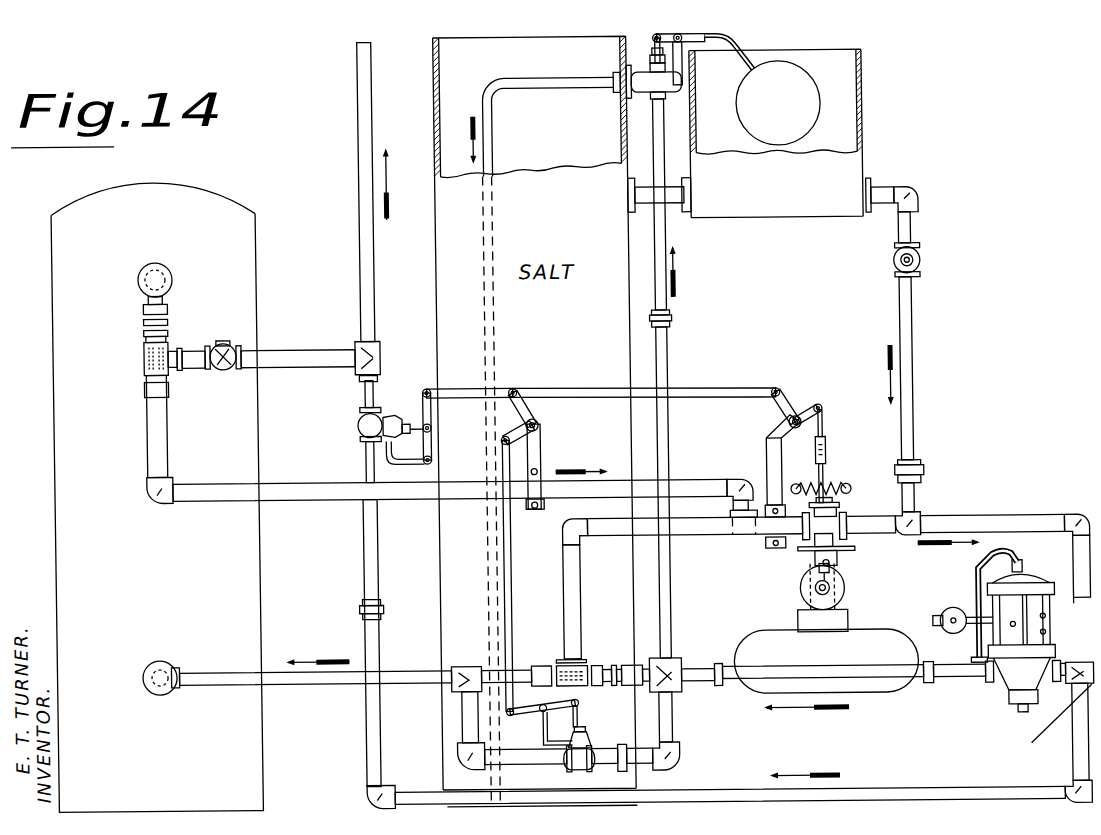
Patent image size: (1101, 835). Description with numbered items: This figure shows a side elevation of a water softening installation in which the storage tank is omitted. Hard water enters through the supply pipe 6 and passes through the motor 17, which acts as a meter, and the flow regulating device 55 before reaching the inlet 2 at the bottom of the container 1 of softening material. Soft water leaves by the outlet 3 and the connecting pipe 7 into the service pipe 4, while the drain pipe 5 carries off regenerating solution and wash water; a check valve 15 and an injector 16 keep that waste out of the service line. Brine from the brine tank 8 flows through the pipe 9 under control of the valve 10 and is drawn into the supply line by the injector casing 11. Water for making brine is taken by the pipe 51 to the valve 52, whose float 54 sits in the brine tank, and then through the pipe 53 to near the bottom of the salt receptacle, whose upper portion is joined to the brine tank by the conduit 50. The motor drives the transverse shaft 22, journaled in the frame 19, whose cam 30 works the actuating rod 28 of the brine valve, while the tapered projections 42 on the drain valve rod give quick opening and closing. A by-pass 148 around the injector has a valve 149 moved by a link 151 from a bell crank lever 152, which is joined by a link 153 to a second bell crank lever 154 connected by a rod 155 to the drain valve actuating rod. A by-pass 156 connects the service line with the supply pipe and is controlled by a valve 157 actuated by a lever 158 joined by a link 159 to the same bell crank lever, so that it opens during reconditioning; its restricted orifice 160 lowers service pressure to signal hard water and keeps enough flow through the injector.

The container 1 is at (64, 264).
The inlet 2 is at (162, 667).
The outlet 3 is at (171, 300).
The service pipe 4 is at (362, 246).
The drain pipe 5 is at (1071, 553).
The hard water supply pipe 6 is at (1078, 672).
The connecting pipe 7 is at (308, 355).
The brine tank 8 is at (744, 133).
The pipe 9 is at (908, 305).
The valve 10 is at (826, 528).
The casing 11 is at (584, 667).
The check valve 15 is at (223, 375).
The injector 16 is at (141, 366).
The motor 17 is at (823, 670).
The frame 19 is at (795, 550).
The transverse shaft 22 is at (842, 591).
The actuating rod 28 is at (838, 503).
The cam 30 is at (806, 596).
The tapered projections 42 is at (825, 486).
The conduit 50 is at (684, 212).
The pipe 51 is at (682, 492).
The valve 52 is at (690, 67).
The pipe 53 is at (496, 155).
The float 54 is at (778, 103).
The flow regulating device 55 is at (991, 635).
The by-pass 148 is at (657, 763).
The valve 149 is at (571, 757).
The link 151 is at (512, 610).
The bell crank lever 152 is at (528, 410).
The link 153 is at (587, 396).
The second bell crank lever 154 is at (790, 406).
The rod 155 is at (823, 430).
The by-pass 156 is at (373, 706).
The valve 157 is at (358, 426).
The lever 158 is at (427, 404).
The link 159 is at (477, 394).
The restricted orifice 160 is at (364, 388).